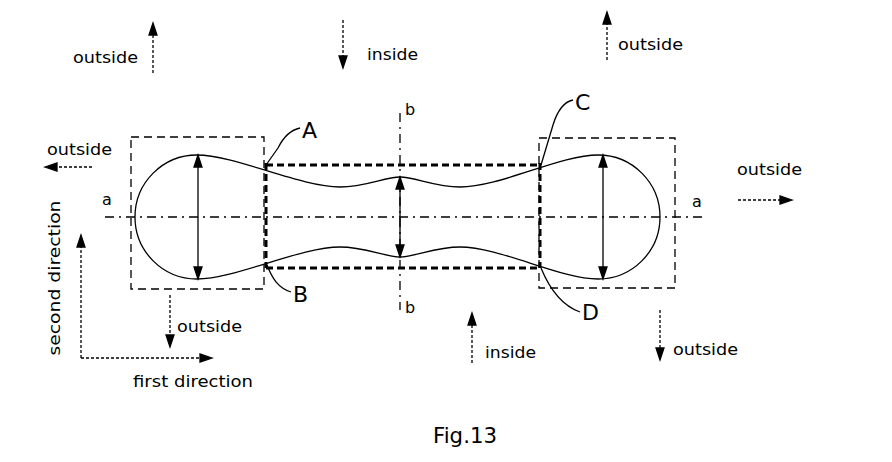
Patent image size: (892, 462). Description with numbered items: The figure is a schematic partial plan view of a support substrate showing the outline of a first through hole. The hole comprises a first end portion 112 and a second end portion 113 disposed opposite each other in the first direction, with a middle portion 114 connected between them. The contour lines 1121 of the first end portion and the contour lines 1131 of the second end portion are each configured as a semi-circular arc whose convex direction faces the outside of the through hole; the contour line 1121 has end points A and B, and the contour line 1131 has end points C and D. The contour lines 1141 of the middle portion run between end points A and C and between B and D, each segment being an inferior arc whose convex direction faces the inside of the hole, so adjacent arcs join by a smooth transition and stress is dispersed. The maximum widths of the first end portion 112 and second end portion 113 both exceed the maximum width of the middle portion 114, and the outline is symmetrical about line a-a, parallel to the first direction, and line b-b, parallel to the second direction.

The first end portion 112 is at (238, 137).
The contour lines of the first end portion 1121 is at (183, 155).
The second end portion 113 is at (617, 138).
The contour lines of the second end portion 1131 is at (645, 170).
The middle portion 114 is at (322, 165).
The contour lines of the middle portion 1141 is at (338, 248).